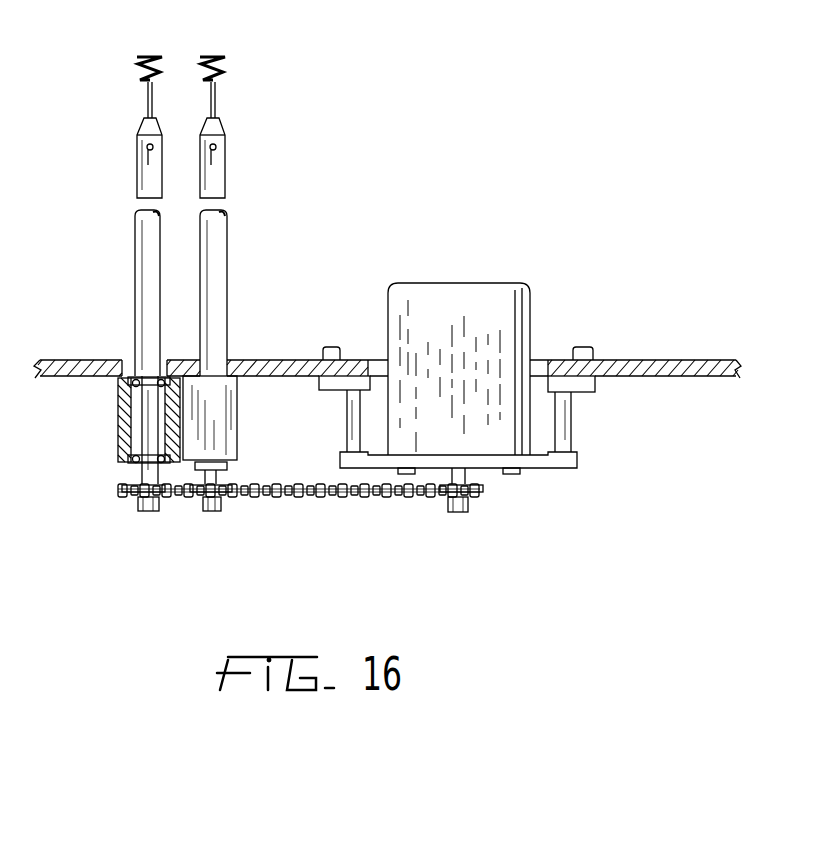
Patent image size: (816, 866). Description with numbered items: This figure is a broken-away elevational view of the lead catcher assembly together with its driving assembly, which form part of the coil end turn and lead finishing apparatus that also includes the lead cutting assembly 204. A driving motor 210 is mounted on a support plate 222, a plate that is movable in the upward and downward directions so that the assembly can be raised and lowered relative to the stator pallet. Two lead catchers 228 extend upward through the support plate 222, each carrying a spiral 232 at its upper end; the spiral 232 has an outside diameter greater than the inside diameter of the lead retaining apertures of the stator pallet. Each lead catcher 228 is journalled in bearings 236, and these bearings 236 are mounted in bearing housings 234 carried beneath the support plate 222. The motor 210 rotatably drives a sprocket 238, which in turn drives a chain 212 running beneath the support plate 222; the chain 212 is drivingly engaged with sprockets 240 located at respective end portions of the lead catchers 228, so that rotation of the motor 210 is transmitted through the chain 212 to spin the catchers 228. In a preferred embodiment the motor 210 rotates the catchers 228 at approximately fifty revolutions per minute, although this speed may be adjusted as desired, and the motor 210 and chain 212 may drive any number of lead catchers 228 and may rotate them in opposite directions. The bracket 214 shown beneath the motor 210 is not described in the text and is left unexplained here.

The lead cutting assembly 204 is at (122, 270).
The driving motor 210 is at (487, 300).
The chain 212 is at (312, 497).
The mounting bar 214 is at (556, 467).
The support plate 222 is at (641, 367).
The lead catchers 228 is at (140, 228).
The spiral 232 is at (226, 78).
The bearing housings 234 is at (116, 420).
The bearings 236 is at (128, 470).
The sprocket 238 is at (470, 500).
The sprockets 240 is at (200, 497).